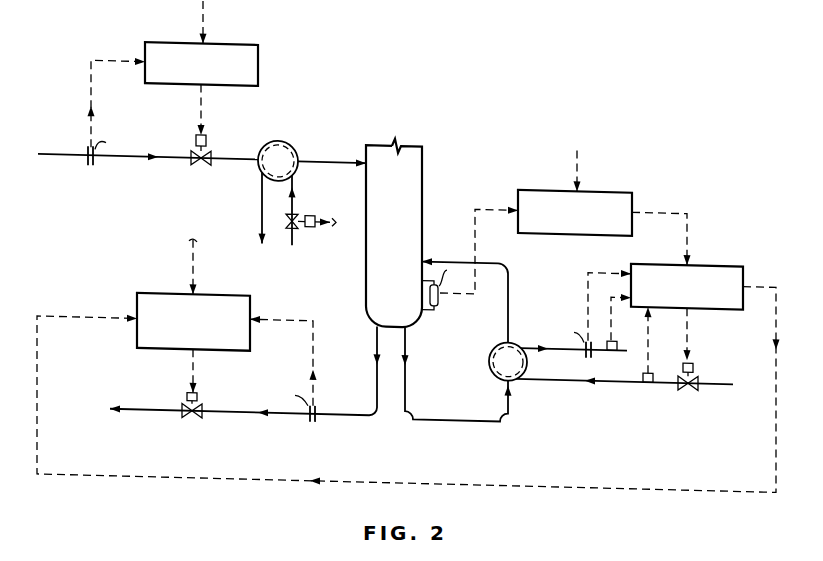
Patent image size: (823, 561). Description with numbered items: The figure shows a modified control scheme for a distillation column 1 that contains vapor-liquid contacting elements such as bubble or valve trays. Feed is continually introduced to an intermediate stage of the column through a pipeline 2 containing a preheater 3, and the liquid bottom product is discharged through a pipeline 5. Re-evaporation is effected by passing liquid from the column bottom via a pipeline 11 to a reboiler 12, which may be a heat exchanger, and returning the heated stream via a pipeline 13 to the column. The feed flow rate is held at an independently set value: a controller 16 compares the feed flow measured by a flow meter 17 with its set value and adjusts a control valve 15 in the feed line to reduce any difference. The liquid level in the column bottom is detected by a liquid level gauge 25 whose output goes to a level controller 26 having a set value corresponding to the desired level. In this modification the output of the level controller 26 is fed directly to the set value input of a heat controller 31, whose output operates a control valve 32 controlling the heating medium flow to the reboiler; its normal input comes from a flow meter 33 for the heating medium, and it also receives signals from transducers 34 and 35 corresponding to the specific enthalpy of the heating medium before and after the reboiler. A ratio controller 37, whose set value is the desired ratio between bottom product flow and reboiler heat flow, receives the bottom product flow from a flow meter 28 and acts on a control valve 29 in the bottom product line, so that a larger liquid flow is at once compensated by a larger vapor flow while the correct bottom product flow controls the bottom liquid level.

The distillation column 1 is at (400, 204).
The pipeline 2 is at (320, 154).
The preheater 3 is at (289, 135).
The pipeline 5 is at (369, 406).
The pipeline 11 is at (445, 409).
The reboiler 12 is at (489, 348).
The pipeline 13 is at (445, 251).
The control valve 15 is at (208, 147).
The controller 16 is at (220, 38).
The flow meter 17 is at (86, 146).
The liquid level gauge 25 is at (439, 289).
The level controller 26 is at (602, 177).
The flow meter 28 is at (316, 414).
The control valve 29 is at (192, 413).
The heat controller 31 is at (712, 248).
The control valve 32 is at (688, 373).
The flow meter 33 is at (592, 343).
The transducer 34 is at (653, 360).
The transducer 35 is at (622, 320).
The ratio controller 37 is at (218, 290).